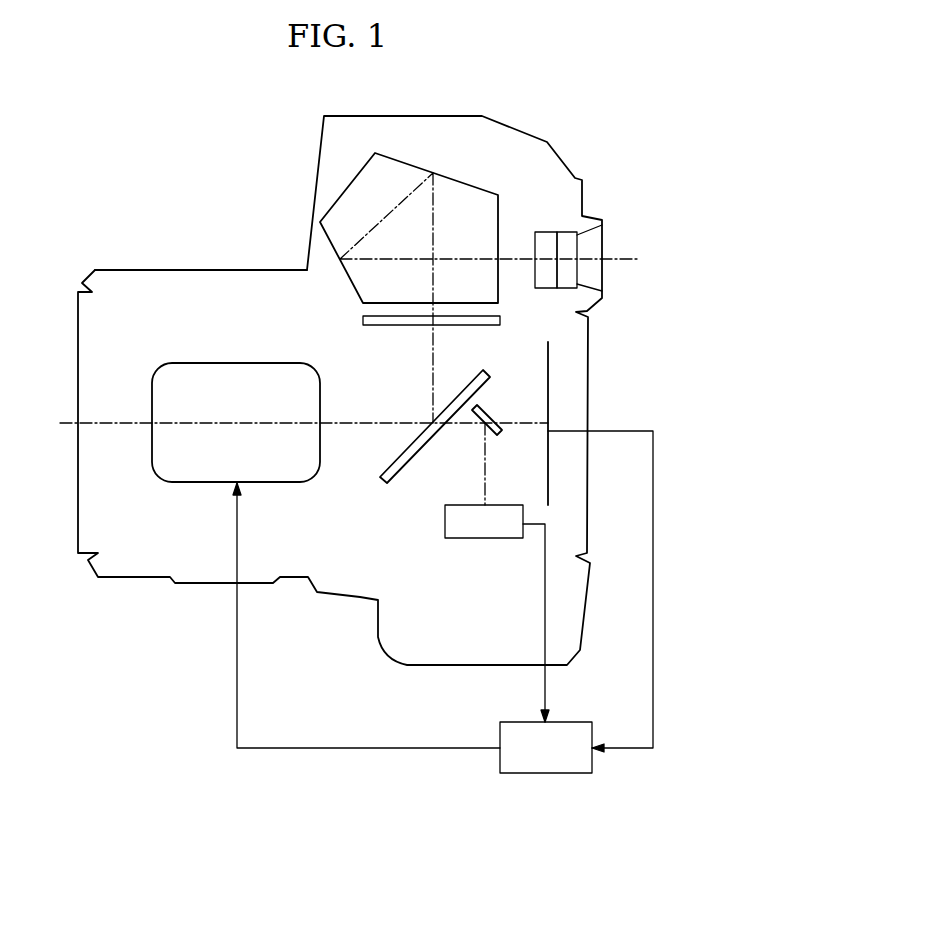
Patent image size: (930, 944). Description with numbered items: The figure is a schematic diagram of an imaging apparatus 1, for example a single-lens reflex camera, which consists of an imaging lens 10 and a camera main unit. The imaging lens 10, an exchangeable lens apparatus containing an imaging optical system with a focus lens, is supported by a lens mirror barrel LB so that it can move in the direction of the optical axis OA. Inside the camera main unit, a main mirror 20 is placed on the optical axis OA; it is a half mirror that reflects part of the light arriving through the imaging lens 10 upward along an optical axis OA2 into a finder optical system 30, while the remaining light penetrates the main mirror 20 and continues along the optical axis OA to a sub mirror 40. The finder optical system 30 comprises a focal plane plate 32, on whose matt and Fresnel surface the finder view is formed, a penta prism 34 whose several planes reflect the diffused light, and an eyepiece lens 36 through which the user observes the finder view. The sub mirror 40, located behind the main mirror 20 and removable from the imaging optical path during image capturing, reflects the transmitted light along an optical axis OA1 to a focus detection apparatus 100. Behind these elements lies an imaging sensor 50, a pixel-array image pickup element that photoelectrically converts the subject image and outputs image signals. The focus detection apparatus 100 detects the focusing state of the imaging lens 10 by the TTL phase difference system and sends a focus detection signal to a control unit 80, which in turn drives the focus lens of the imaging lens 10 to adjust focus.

The imaging apparatus 1 is at (230, 160).
The lens mirror barrel LB is at (190, 271).
The imaging lens 10 is at (202, 483).
The main mirror 20 is at (400, 455).
The finder optical system 30 is at (595, 98).
The focal plane plate 32 is at (457, 326).
The penta prism 34 is at (472, 183).
The eyepiece lens 36 is at (548, 232).
The sub mirror 40 is at (488, 410).
The imaging sensor 50 is at (548, 345).
The control unit 80 is at (547, 773).
The focus detection apparatus 100 is at (445, 522).
The optical axis OA is at (112, 427).
The optical axis OA1 is at (483, 487).
The optical axis OA2 is at (430, 362).